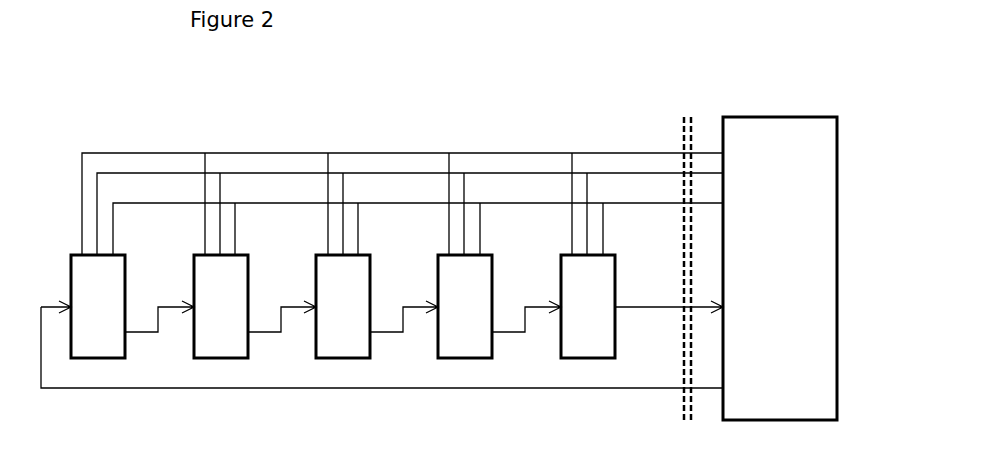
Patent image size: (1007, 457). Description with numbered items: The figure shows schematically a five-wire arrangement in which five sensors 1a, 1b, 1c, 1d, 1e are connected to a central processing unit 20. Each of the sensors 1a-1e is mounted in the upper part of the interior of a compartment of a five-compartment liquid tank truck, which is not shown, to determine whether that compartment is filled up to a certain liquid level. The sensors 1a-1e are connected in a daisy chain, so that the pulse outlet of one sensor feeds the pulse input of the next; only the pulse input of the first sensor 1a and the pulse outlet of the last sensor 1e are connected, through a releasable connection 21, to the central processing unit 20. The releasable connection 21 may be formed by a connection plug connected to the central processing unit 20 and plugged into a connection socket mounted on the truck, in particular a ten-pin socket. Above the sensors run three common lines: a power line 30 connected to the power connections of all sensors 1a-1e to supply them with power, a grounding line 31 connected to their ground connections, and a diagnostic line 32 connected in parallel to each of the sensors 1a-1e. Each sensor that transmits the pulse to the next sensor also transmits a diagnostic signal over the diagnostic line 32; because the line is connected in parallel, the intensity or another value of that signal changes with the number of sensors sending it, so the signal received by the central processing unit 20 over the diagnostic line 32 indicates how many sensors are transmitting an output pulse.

The first sensor 1a is at (98, 306).
The second sensor 1b is at (221, 306).
The third sensor 1c is at (343, 306).
The fourth sensor 1d is at (465, 306).
The last sensor 1e is at (588, 306).
The central processing unit 20 is at (780, 117).
The releasable connection 21 is at (687, 118).
The power line 30 is at (257, 152).
The grounding line 31 is at (288, 172).
The diagnostic line 32 is at (392, 203).